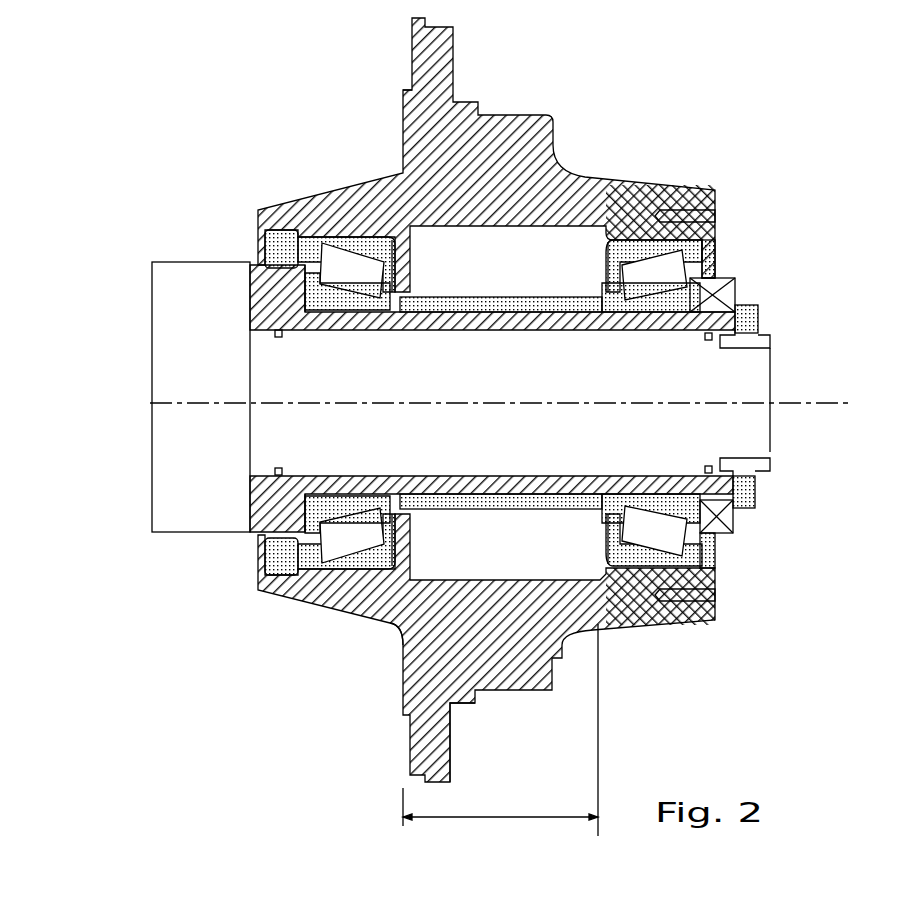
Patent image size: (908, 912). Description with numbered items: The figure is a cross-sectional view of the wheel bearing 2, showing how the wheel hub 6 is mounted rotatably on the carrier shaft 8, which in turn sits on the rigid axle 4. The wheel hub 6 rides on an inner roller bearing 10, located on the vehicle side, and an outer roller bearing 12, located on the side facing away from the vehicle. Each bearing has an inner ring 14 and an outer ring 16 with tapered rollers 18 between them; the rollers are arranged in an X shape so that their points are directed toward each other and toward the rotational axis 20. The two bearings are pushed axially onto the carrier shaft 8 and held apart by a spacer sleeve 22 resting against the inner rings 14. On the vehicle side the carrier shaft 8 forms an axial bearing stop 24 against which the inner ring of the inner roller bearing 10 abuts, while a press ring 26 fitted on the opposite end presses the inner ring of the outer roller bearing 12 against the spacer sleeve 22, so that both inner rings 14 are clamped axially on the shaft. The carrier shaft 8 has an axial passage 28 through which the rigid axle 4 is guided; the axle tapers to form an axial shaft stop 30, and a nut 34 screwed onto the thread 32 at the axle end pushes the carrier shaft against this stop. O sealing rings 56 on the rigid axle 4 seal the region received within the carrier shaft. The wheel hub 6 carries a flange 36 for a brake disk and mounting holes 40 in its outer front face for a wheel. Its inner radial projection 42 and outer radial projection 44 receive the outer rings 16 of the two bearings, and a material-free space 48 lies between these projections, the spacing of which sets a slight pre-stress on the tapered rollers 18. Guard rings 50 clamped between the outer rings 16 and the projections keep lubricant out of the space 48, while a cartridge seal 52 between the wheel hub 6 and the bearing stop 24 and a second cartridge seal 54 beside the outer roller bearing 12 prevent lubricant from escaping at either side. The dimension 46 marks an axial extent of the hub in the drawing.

The wheel bearing 2 is at (812, 123).
The rigid axle 4 is at (287, 423).
The wheel hub 6 is at (508, 116).
The carrier shaft 8 is at (252, 534).
The inner roller bearing 10 is at (328, 255).
The outer roller bearing 12 is at (632, 238).
The inner ring 14 is at (733, 520).
The outer ring 16 is at (715, 570).
The tapered rollers 18 is at (665, 496).
The rotational axis 20 is at (851, 400).
The spacer sleeve 22 is at (556, 508).
The axial bearing stop 24 is at (250, 270).
The press ring 26 is at (737, 284).
The axial passage 28 is at (303, 332).
The axial shaft stop 30 is at (196, 308).
The thread 32 is at (766, 345).
The nut 34 is at (758, 312).
The flange 36 is at (432, 47).
The mounting holes 40 is at (695, 210).
The inner radial projection 42 is at (388, 583).
The outer radial projection 44 is at (656, 624).
The width 46 is at (508, 817).
The space 48 is at (466, 548).
The guard rings 50 is at (392, 262).
The cartridge seal 52 is at (262, 238).
The cartridge seal 54 is at (710, 262).
The O sealing rings 56 is at (276, 470).